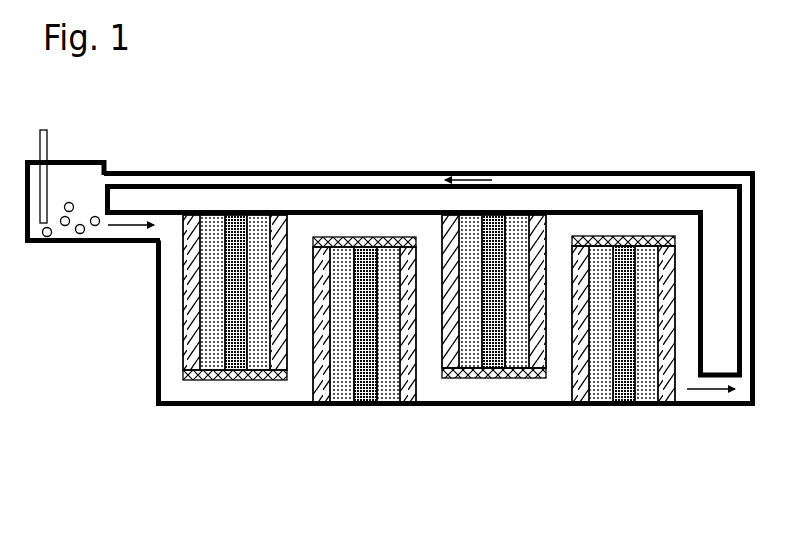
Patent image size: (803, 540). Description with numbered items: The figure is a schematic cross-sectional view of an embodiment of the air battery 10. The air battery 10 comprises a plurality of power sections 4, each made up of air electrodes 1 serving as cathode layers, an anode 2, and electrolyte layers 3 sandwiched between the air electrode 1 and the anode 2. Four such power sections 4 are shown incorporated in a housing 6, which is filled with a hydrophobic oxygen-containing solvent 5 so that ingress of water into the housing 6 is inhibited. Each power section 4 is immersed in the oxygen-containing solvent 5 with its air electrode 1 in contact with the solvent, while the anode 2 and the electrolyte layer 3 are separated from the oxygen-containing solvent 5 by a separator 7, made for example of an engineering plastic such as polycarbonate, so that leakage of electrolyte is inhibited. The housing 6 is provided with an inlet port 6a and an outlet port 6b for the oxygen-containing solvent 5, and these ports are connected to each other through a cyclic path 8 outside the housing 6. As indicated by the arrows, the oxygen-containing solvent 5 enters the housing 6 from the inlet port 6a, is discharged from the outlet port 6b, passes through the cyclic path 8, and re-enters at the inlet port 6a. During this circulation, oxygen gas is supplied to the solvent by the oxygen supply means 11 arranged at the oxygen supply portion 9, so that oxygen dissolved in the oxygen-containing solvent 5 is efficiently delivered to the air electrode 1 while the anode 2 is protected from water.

The air electrode 1 is at (196, 363).
The anode 2 is at (238, 362).
The electrolyte layer 3 is at (218, 362).
The power section 4 is at (187, 447).
The oxygen-containing solvent 5 is at (172, 310).
The housing 6 is at (157, 345).
The inlet port 6a is at (132, 232).
The outlet port 6b is at (723, 403).
The separator 7 is at (183, 375).
The cyclic path 8 is at (530, 178).
The oxygen supply portion 9 is at (47, 161).
The air battery 10 is at (382, 81).
The oxygen supply means 11 is at (44, 130).